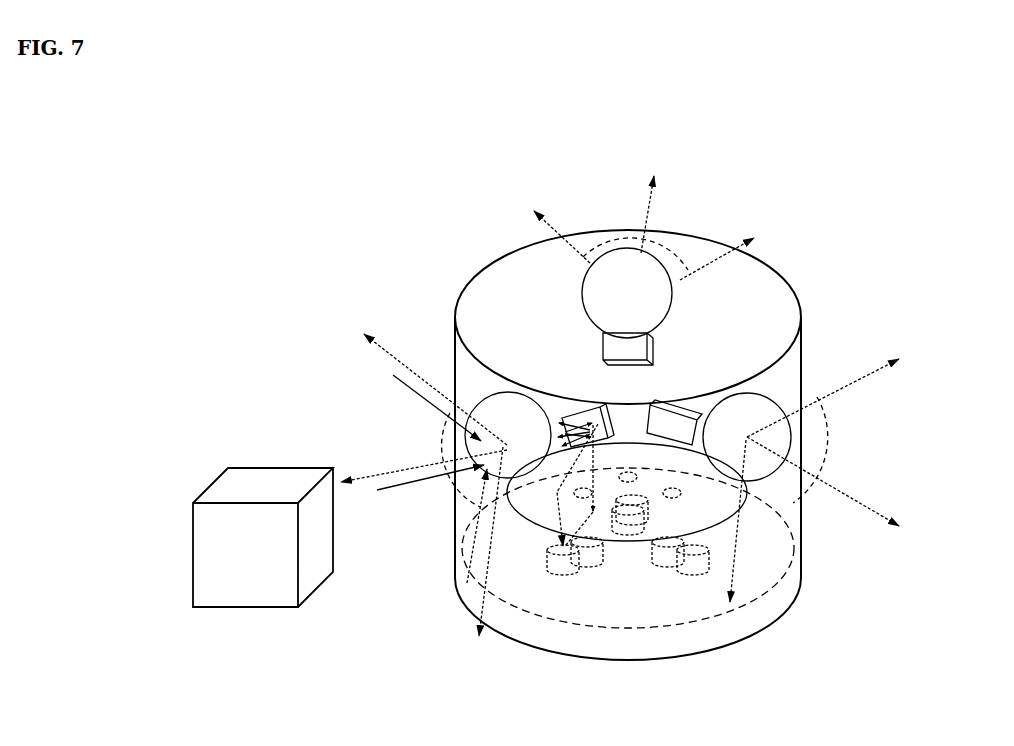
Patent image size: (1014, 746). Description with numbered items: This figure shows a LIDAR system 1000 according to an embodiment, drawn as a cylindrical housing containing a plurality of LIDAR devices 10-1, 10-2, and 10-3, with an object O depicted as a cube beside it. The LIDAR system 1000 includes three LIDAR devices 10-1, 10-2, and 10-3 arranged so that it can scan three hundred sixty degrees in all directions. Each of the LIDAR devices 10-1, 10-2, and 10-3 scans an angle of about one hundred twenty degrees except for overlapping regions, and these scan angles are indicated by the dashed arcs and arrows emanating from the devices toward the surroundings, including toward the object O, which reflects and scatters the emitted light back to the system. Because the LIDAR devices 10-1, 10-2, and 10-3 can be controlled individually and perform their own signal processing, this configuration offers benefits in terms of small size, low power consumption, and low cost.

The LIDAR system 1000 is at (263, 121).
The LIDAR device 10-1 is at (714, 302).
The LIDAR device 10-2 is at (750, 537).
The LIDAR device 10-3 is at (525, 579).
The object O is at (224, 487).